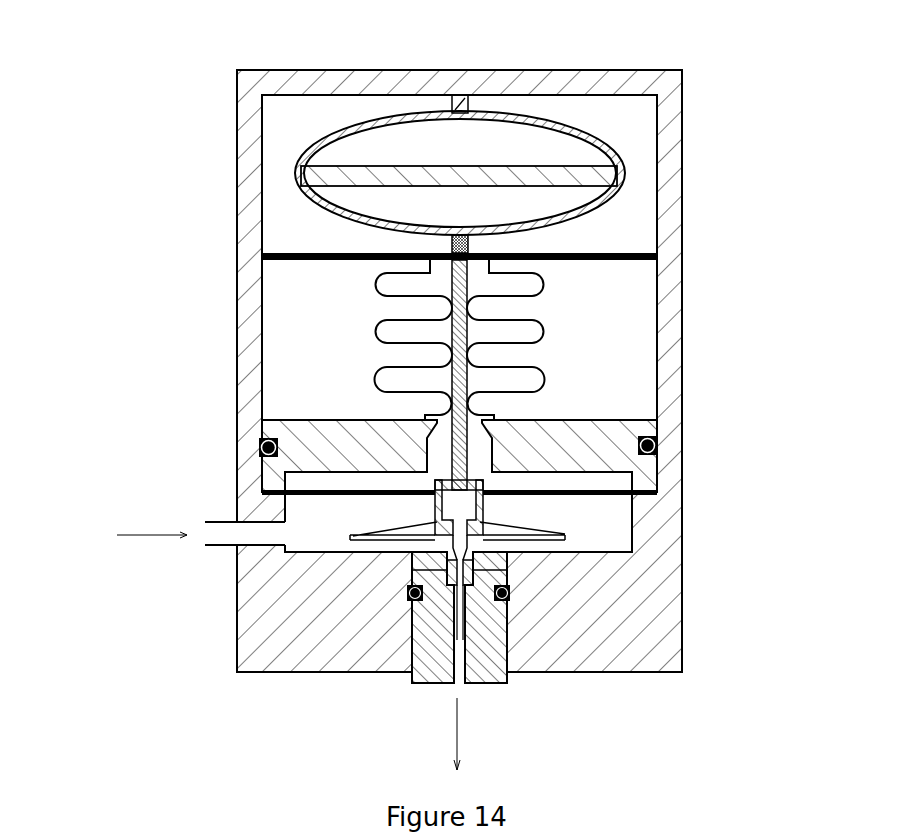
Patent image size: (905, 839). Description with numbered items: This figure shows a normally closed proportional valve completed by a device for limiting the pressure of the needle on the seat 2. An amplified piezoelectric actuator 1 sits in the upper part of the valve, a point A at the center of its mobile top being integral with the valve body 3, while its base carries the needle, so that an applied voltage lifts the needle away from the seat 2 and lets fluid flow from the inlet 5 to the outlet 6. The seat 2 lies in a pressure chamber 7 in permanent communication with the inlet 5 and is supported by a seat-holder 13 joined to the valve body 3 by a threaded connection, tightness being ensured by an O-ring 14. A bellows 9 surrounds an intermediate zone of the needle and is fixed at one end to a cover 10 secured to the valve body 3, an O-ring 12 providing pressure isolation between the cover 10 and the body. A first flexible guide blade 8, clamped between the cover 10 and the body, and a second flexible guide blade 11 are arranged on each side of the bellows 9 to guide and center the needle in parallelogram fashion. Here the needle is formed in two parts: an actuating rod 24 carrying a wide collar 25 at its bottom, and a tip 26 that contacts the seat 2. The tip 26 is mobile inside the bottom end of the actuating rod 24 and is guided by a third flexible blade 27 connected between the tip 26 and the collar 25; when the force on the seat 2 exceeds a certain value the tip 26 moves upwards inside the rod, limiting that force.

The amplified piezoelectric actuator 1 is at (620, 158).
The seat 2 is at (412, 574).
The valve body 3 is at (672, 180).
The inlet 5 is at (223, 552).
The outlet 6 is at (460, 683).
The pressure chamber 7 is at (307, 515).
The first flexible guide blade 8 is at (608, 493).
The bellows 9 is at (540, 332).
The cover 10 is at (572, 437).
The second flexible guide blade 11 is at (620, 252).
The O-ring 12 is at (656, 447).
The seat-holder 13 is at (480, 653).
The O-ring 14 is at (410, 598).
The actuating rod 24 is at (462, 385).
The wide collar 25 is at (483, 533).
The tip 26 is at (463, 552).
The third flexible blade 27 is at (520, 528).
The point of the actuator top A is at (461, 104).